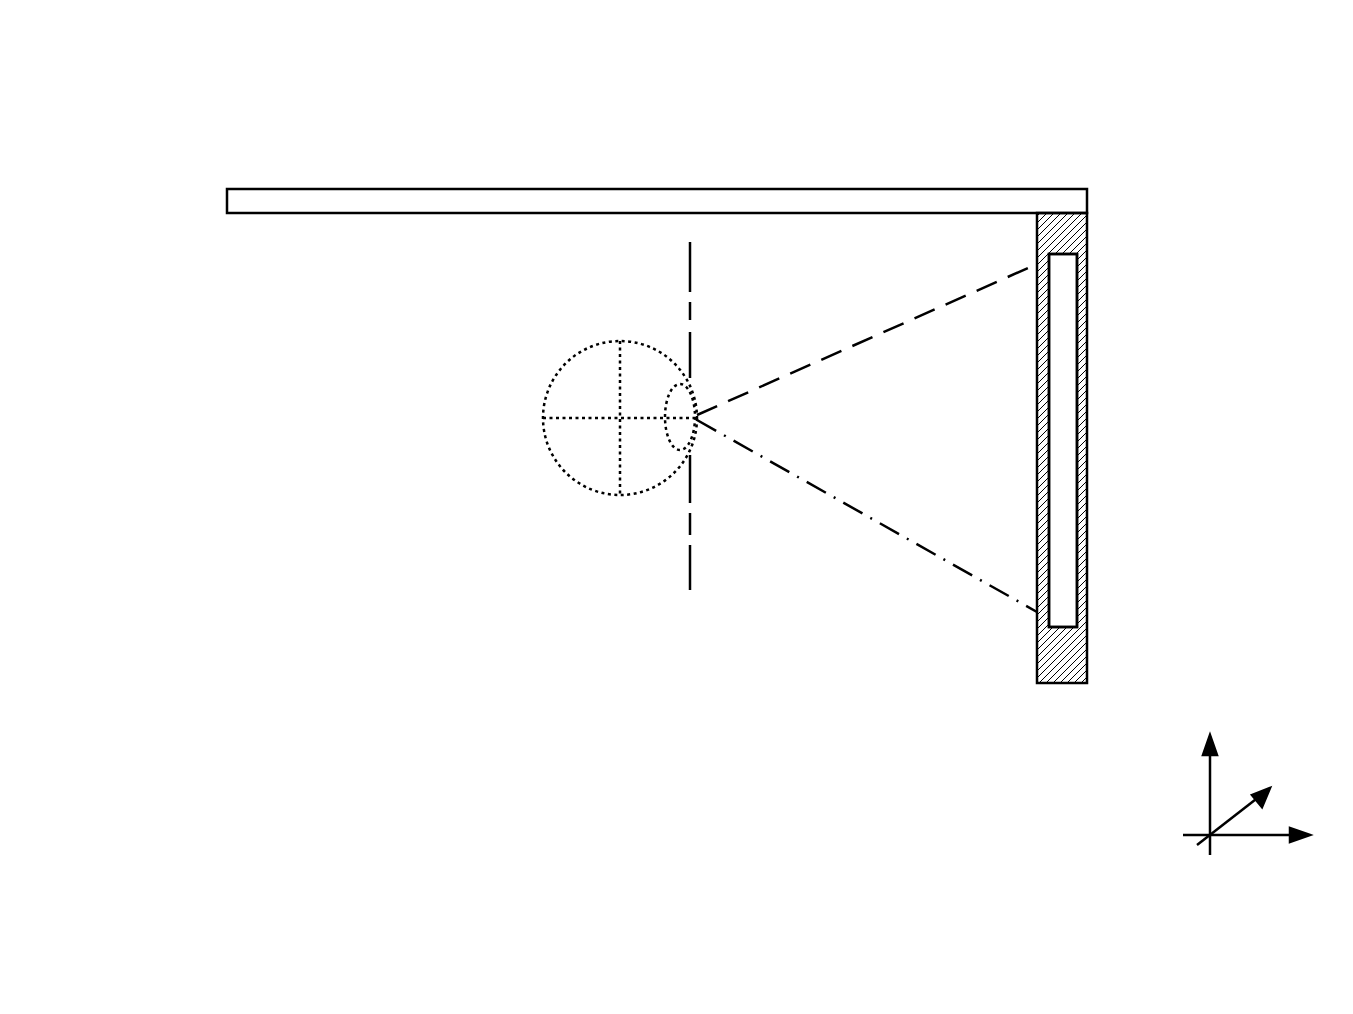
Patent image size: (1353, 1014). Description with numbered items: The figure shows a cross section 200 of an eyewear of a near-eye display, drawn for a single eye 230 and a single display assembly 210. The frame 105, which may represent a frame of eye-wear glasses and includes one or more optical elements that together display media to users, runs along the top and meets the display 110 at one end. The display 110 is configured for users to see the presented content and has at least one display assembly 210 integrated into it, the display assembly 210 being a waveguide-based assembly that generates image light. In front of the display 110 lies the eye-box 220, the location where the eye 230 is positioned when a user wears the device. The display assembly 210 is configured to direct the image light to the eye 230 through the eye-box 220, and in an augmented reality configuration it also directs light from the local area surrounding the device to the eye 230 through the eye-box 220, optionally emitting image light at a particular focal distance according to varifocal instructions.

The cross section 200 is at (88, 32).
The frame 105 is at (457, 188).
The display assembly 210 is at (1058, 328).
The display 110 is at (1087, 562).
The eye 230 is at (578, 352).
The eye-box 220 is at (687, 513).